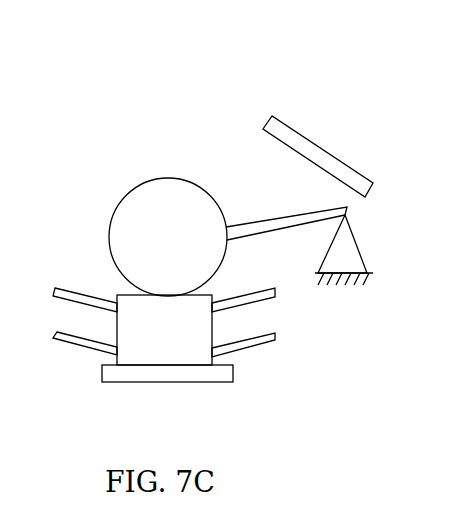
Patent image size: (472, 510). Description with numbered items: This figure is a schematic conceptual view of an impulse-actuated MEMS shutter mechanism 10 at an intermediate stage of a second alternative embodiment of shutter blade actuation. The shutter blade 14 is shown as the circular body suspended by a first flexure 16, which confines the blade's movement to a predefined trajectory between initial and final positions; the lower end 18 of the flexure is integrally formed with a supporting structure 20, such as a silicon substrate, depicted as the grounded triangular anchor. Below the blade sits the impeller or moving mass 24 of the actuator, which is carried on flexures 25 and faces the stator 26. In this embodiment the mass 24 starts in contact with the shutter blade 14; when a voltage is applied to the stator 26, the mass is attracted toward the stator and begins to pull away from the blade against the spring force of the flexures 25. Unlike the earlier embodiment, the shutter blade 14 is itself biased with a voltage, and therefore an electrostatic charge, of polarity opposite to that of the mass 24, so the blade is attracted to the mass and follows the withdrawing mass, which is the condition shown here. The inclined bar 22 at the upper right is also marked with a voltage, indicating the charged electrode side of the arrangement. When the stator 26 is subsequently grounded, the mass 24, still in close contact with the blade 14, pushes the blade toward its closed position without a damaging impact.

The shutter mechanism 10 is at (153, 80).
The shutter blade 14 is at (132, 188).
The first flexure 16 is at (265, 217).
The lower end 18 is at (348, 211).
The supporting structure 20 is at (346, 272).
The plate 22 is at (367, 172).
The moving mass 24 is at (212, 333).
The flexures 25 is at (77, 308).
The stator 26 is at (112, 382).